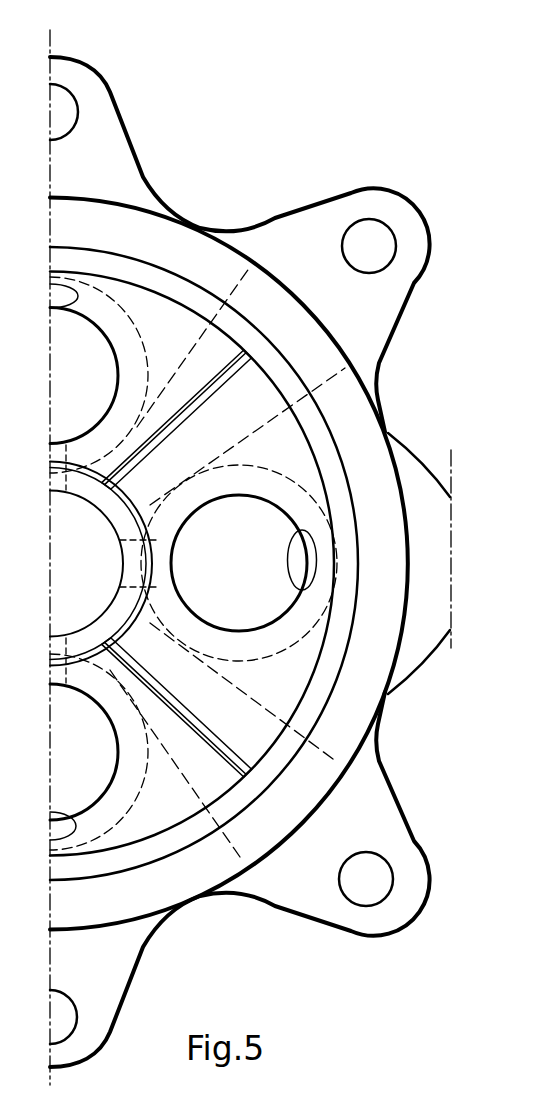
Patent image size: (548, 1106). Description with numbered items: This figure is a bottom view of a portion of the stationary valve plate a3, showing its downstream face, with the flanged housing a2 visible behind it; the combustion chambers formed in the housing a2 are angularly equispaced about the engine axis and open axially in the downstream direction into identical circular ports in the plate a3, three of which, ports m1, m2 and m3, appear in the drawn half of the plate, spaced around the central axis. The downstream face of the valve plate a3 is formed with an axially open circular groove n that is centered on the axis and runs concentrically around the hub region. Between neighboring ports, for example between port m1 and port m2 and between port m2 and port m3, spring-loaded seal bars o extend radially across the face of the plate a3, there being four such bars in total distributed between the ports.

The housing a2 is at (113, 170).
The stationary valve plate a3 is at (137, 288).
The circular groove n is at (284, 377).
The spring-loaded seal bar o is at (215, 397).
The circular port m1 is at (86, 382).
The circular port m2 is at (250, 587).
The circular port m3 is at (90, 788).